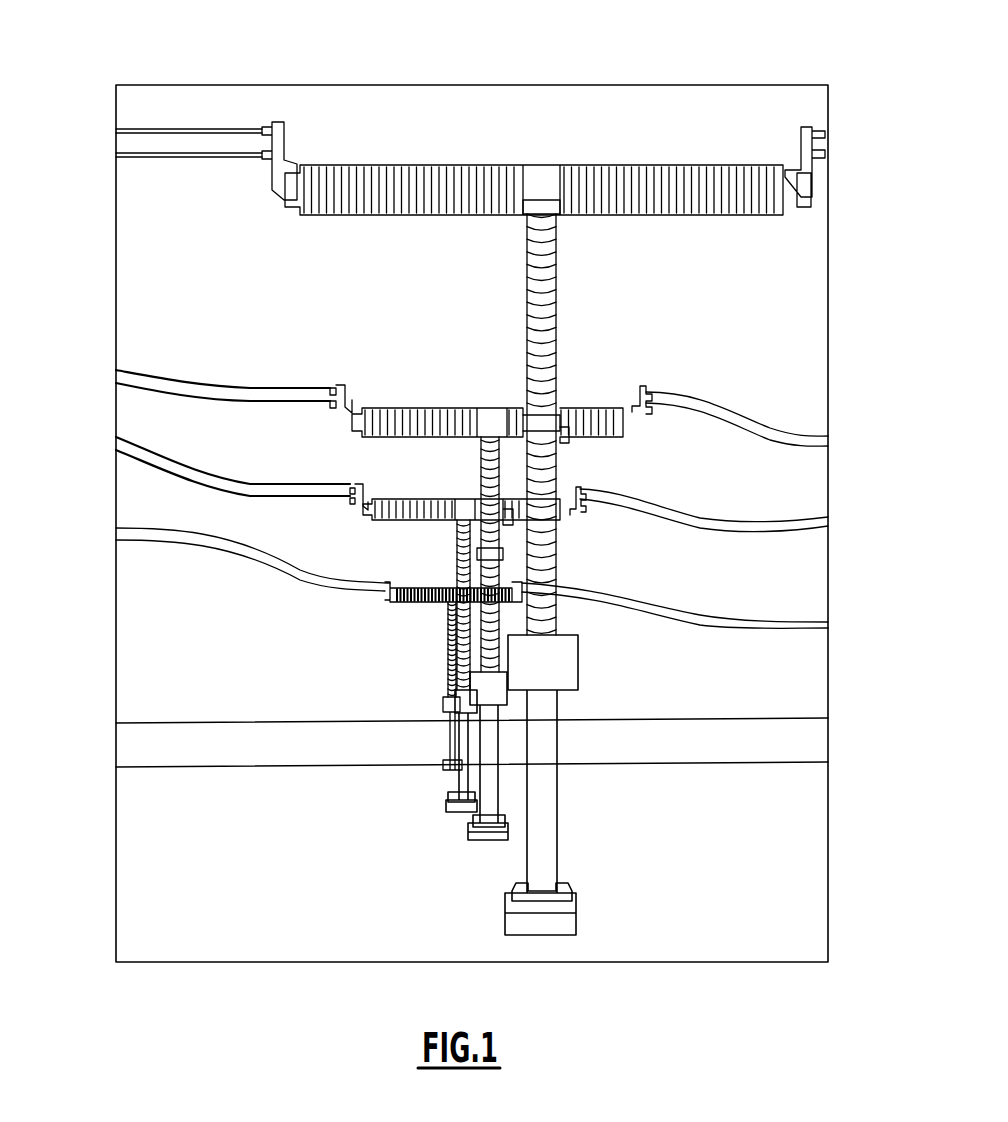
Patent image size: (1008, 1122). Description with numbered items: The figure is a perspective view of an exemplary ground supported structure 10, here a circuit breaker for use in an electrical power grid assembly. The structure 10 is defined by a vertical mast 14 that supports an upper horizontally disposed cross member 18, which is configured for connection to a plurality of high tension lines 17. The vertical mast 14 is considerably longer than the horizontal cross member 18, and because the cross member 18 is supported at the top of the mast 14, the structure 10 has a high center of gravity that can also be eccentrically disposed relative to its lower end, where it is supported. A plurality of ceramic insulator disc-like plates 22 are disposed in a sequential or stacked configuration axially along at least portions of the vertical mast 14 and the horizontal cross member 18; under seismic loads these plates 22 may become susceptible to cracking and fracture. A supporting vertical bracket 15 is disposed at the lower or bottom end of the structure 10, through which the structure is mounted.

The structure 10 is at (334, 33).
The vertical mast 14 is at (548, 370).
The supporting vertical bracket 15 is at (545, 843).
The high tension lines 17 is at (185, 379).
The horizontal cross member 18 is at (791, 191).
The ceramic insulator disc-like plates 22 is at (696, 180).